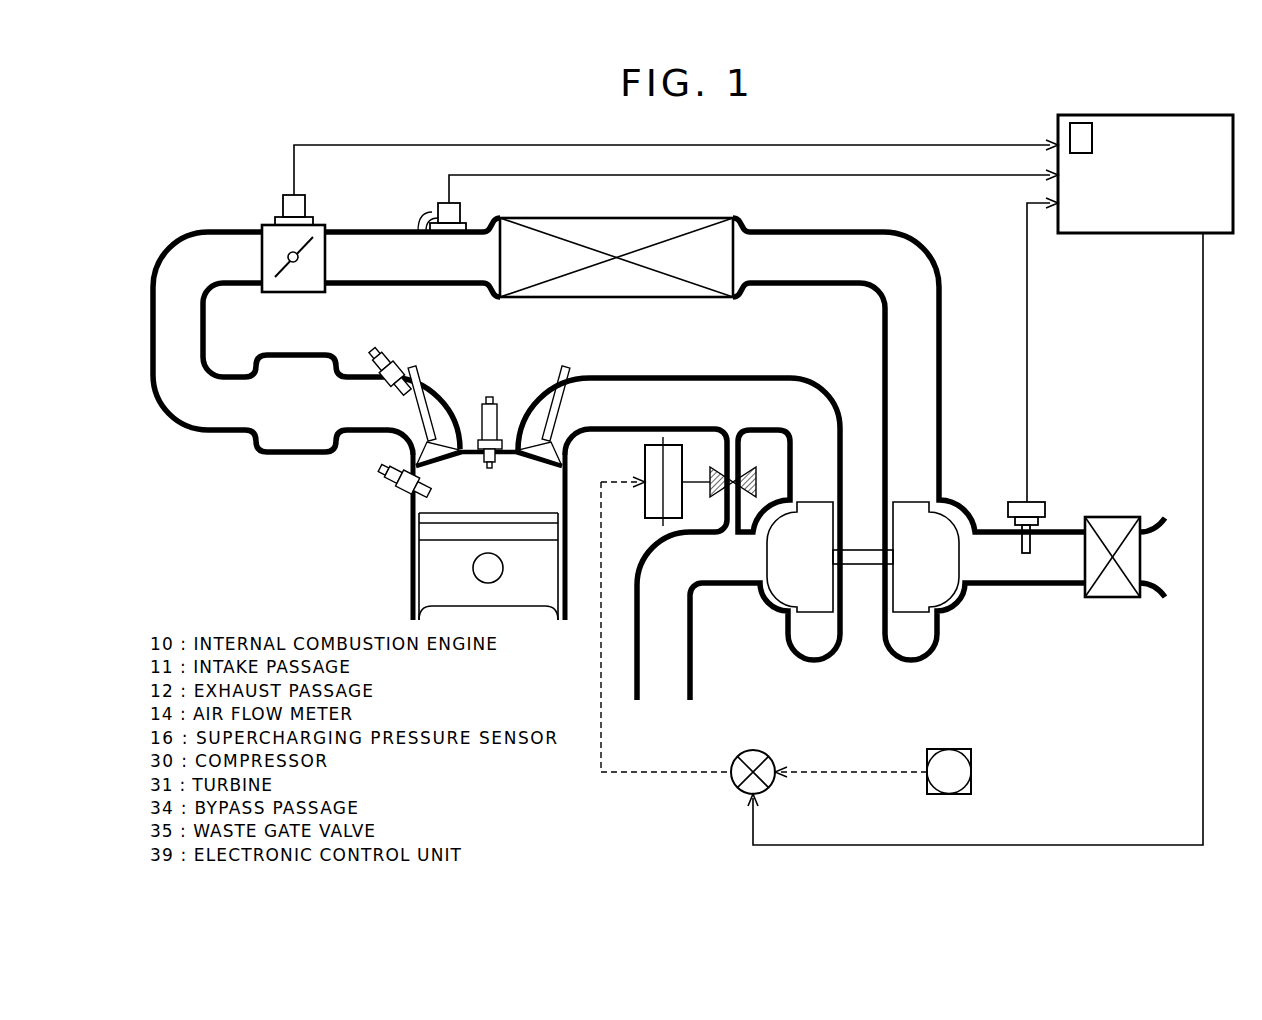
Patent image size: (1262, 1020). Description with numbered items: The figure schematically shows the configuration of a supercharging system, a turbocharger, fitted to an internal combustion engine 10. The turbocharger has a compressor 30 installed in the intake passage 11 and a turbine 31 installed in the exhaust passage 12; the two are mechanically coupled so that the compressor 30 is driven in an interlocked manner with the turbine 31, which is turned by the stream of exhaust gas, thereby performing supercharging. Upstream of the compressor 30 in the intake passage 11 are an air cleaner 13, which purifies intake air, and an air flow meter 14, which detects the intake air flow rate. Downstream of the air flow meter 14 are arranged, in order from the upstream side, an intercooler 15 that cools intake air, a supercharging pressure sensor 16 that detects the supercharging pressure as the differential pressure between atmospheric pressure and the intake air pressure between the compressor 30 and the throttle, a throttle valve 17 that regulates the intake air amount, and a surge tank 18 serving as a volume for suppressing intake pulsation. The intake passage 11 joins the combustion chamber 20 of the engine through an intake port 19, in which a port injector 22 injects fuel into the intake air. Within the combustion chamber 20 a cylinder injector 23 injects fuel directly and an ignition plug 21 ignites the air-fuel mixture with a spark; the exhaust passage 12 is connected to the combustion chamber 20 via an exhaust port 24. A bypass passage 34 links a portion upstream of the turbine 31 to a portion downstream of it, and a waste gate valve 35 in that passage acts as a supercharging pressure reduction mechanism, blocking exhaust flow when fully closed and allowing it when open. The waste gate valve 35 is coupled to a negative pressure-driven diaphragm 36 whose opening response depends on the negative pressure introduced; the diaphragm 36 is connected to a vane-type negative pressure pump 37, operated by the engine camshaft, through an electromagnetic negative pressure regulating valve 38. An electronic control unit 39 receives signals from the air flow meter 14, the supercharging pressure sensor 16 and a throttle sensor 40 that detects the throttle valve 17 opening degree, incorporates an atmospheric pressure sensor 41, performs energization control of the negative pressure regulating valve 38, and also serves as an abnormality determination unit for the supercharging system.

The internal combustion engine 10 is at (326, 543).
The intake passage 11 is at (940, 343).
The exhaust passage 12 is at (735, 378).
The air cleaner 13 is at (1110, 516).
The air flow meter 14 is at (1007, 506).
The intercooler 15 is at (612, 299).
The supercharging pressure sensor 16 is at (462, 211).
The throttle valve 17 is at (308, 250).
The surge tank 18 is at (297, 453).
The intake port 19 is at (420, 429).
The combustion chamber 20 is at (501, 499).
The ignition plug 21 is at (497, 411).
The port injector 22 is at (404, 359).
The cylinder injector 23 is at (395, 497).
The exhaust port 24 is at (595, 422).
The compressor 30 is at (939, 590).
The turbine 31 is at (783, 590).
The bypass passage 34 is at (742, 463).
The waste gate valve 35 is at (721, 500).
The diaphragm 36 is at (643, 469).
The negative pressure pump 37 is at (949, 749).
The negative pressure regulating valve 38 is at (753, 749).
The electronic control unit 39 is at (1100, 235).
The throttle sensor 40 is at (307, 204).
The atmospheric pressure sensor 41 is at (1093, 136).